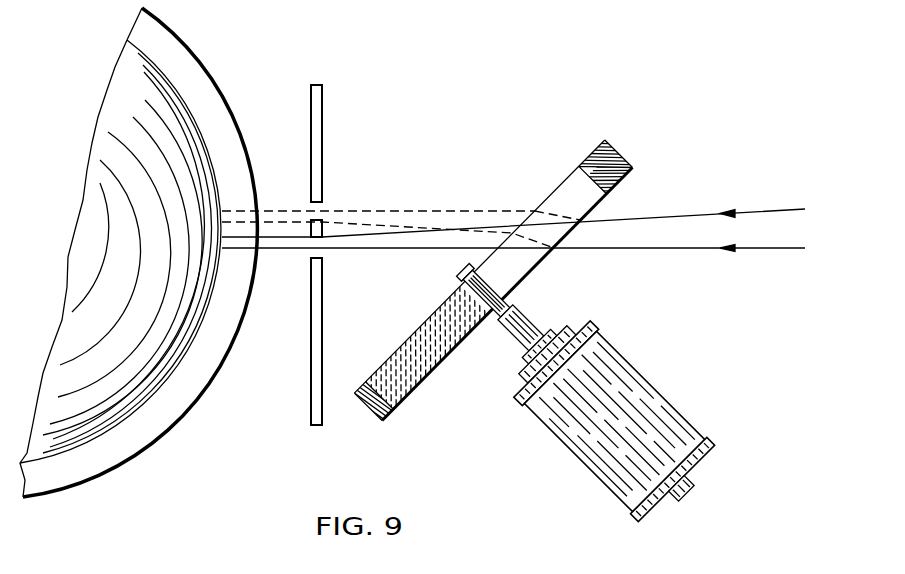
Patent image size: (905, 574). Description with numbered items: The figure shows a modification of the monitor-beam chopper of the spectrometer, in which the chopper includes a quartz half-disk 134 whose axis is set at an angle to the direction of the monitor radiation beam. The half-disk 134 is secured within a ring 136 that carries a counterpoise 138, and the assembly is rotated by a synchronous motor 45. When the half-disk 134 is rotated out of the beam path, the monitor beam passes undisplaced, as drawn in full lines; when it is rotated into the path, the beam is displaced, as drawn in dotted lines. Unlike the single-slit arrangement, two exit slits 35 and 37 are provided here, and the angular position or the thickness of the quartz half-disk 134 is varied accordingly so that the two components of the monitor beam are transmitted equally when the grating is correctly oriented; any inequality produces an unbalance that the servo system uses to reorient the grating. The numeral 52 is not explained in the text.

The lens dome 52 is at (178, 109).
The exit slit 35 is at (320, 204).
The exit slit 37 is at (322, 252).
The quartz half-disk 134 is at (425, 326).
The ring 136 is at (583, 166).
The counterpoise 138 is at (620, 150).
The synchronous motor 45 is at (650, 402).